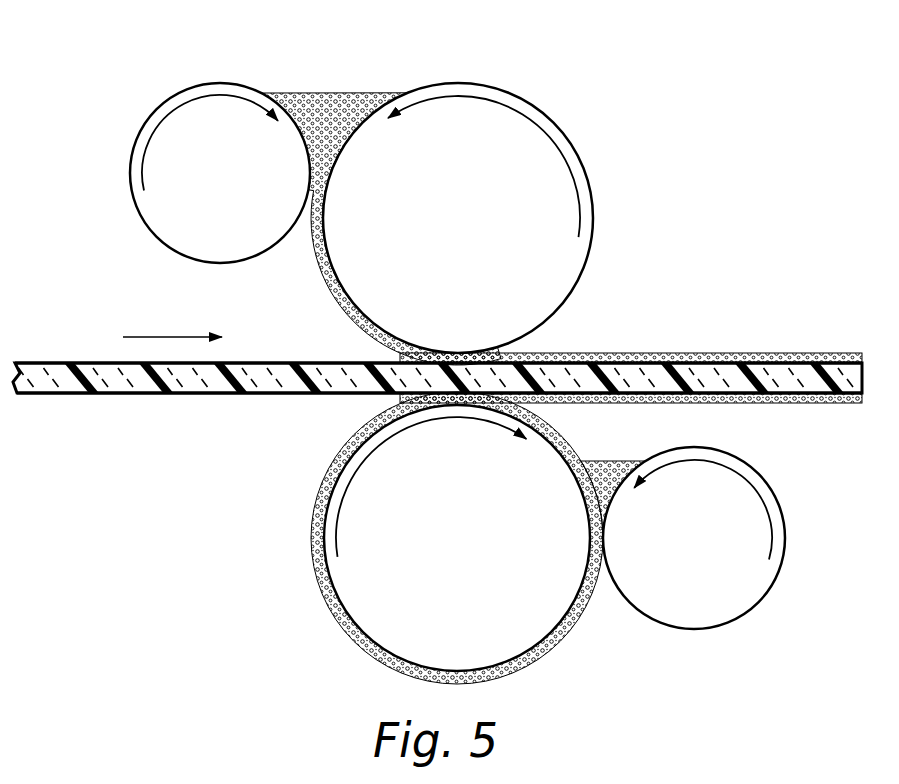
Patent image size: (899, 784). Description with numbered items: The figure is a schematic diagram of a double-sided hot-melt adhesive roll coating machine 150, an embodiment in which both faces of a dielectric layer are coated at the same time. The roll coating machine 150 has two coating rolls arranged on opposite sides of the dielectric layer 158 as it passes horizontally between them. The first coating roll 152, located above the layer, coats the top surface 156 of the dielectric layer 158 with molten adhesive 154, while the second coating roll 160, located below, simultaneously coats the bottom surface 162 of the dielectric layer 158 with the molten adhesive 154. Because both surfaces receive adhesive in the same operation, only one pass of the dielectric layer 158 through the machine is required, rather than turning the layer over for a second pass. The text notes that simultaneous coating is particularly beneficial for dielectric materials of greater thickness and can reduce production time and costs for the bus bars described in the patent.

The roll coating machine 150 is at (750, 134).
The first coating roll 152 is at (527, 272).
The molten adhesive 154 is at (325, 107).
The top surface 156 is at (82, 362).
The dielectric layer 158 is at (122, 392).
The second coating roll 160 is at (400, 586).
The bottom surface 162 is at (278, 393).